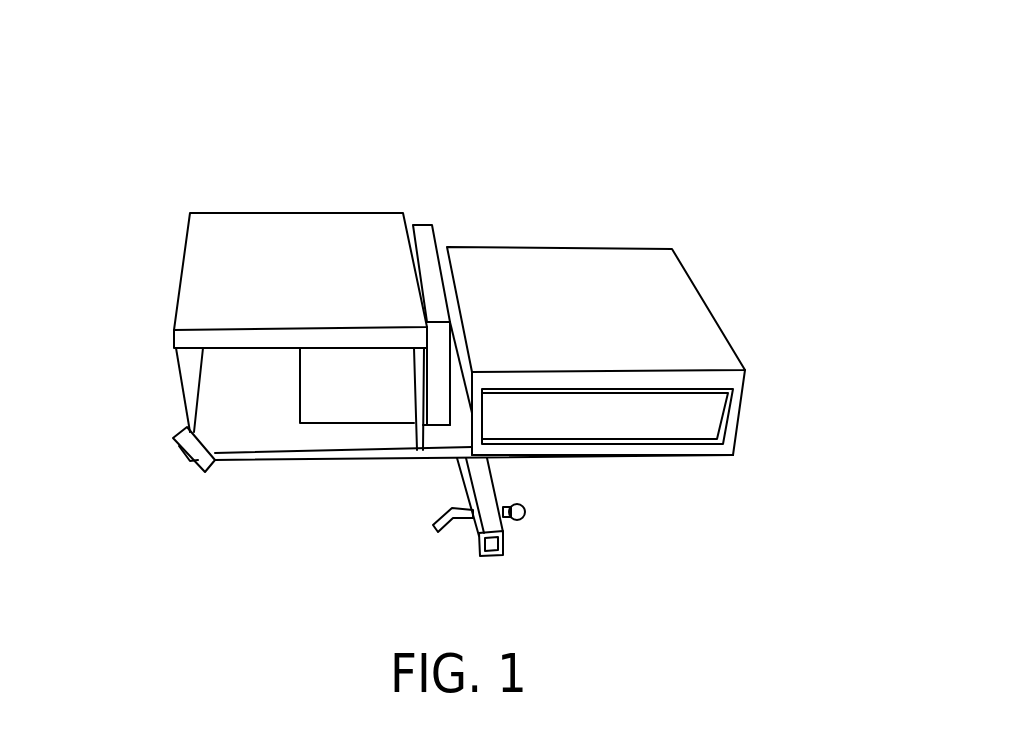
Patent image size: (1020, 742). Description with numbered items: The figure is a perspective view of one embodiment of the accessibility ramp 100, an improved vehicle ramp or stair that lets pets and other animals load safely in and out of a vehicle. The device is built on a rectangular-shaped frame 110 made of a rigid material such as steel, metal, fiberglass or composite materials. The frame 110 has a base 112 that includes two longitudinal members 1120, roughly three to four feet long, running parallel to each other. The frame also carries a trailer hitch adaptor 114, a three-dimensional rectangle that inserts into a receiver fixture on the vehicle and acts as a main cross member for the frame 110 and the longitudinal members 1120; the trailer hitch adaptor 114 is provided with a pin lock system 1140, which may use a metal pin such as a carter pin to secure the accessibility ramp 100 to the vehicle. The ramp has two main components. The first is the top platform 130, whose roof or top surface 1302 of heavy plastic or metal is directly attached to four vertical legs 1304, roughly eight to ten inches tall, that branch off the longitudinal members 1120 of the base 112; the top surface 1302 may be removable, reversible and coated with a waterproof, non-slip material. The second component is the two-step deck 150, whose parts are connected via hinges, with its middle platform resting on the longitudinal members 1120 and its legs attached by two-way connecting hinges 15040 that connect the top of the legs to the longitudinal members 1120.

The accessibility ramp 100 is at (512, 202).
The two-step deck 150 is at (153, 265).
The two-way connecting hinges 15040 is at (188, 440).
The rectangular-shaped frame 110 is at (298, 455).
The longitudinal members 1120 is at (605, 449).
The base 112 is at (417, 475).
The pin lock system 1140 is at (440, 523).
The trailer hitch adaptor 114 is at (525, 518).
The top platform 130 is at (672, 227).
The top surface 1302 is at (672, 310).
The vertical legs 1304 is at (733, 408).